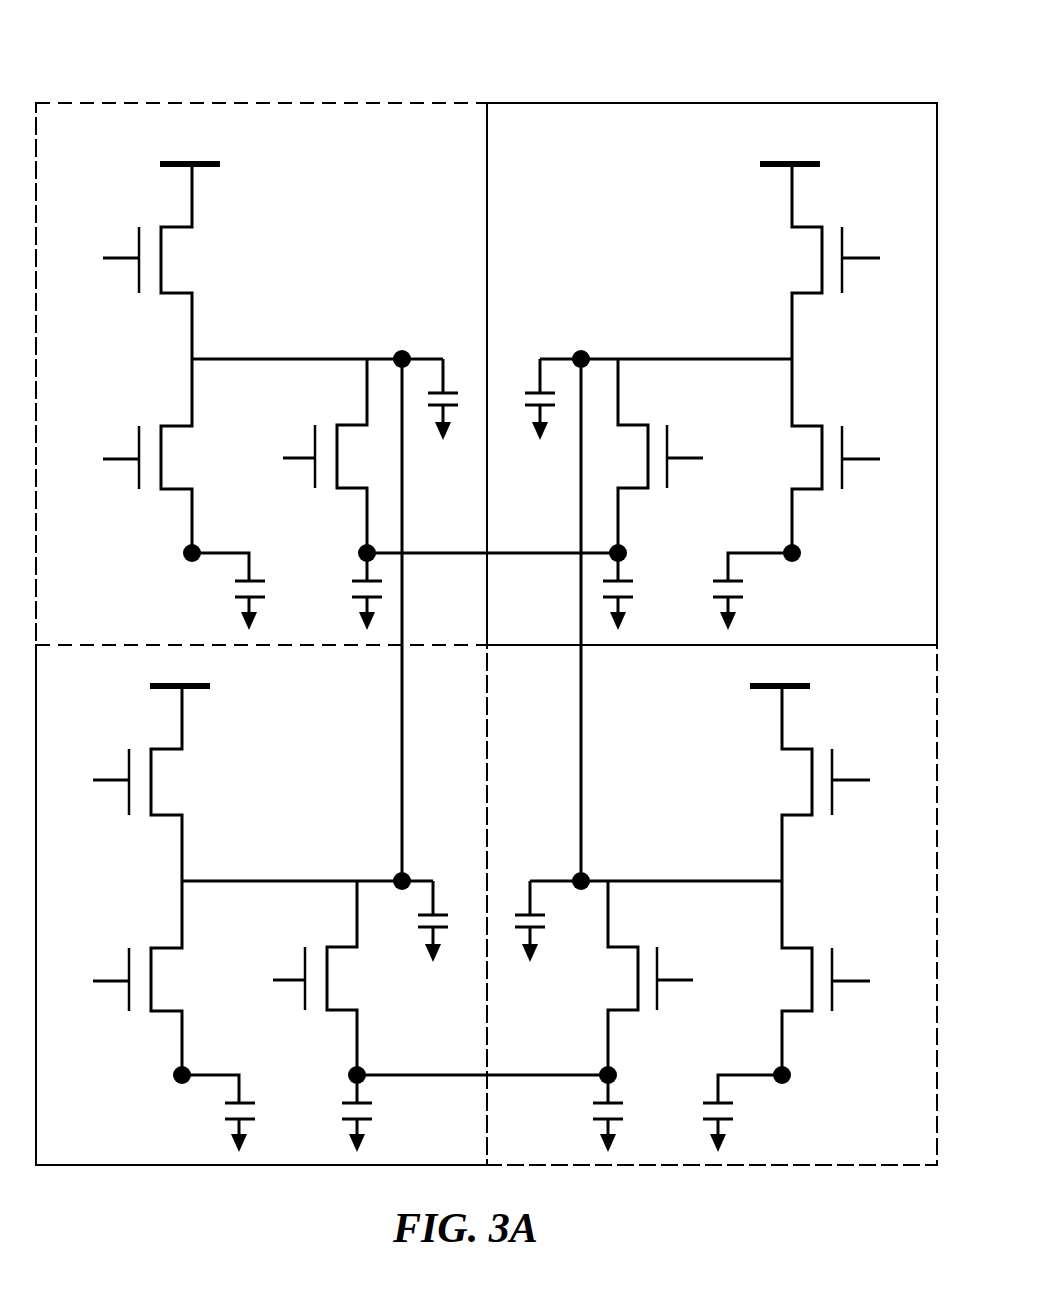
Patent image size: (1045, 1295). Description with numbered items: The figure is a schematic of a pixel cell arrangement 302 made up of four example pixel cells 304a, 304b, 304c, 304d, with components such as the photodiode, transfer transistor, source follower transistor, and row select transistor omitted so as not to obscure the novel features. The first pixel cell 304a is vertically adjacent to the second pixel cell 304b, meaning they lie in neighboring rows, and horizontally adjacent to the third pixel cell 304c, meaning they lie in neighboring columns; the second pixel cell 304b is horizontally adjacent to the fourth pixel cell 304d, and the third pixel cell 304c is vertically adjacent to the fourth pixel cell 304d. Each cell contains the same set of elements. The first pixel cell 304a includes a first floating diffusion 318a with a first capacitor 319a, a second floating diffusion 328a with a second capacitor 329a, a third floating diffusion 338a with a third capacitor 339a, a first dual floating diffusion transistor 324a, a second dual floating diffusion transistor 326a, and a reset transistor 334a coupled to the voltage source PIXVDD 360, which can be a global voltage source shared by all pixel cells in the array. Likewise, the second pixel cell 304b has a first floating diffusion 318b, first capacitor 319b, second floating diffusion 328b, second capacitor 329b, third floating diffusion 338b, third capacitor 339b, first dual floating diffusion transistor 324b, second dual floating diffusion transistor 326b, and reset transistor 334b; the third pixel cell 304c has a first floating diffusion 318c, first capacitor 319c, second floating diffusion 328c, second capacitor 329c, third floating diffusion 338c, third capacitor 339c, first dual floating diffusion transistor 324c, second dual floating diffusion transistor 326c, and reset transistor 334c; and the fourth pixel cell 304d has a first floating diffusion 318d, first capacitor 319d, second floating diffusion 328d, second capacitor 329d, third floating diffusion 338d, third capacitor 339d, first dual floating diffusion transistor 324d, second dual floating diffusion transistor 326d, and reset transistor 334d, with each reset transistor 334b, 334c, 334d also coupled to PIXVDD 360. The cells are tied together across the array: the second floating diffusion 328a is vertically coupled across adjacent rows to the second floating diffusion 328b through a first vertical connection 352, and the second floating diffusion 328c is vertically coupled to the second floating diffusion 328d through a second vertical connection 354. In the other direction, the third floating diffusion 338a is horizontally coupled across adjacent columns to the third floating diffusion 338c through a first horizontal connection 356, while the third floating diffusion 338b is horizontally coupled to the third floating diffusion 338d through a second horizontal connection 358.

The pixel cell circuit 302 is at (223, 90).
The first pixel cell 304a is at (105, 136).
The second pixel cell 304b is at (105, 680).
The third pixel cell 304c is at (560, 136).
The fourth pixel cell 304d is at (560, 680).
The first floating diffusion FD1 318a is at (138, 555).
The first floating diffusion FD1 318b is at (126, 1076).
The first floating diffusion FD1 318c is at (848, 555).
The first floating diffusion FD1 318d is at (839, 1076).
The first capacitor 319a is at (228, 592).
The first capacitor 319b is at (205, 1113).
The first capacitor 319c is at (745, 592).
The first capacitor 319d is at (753, 1113).
The first dual floating diffusion transistor DFD1 324a is at (76, 440).
The first dual floating diffusion transistor DFD1 324b is at (111, 978).
The first dual floating diffusion transistor DFD1 324c is at (903, 440).
The first dual floating diffusion transistor DFD1 324d is at (852, 978).
The second dual floating diffusion transistor DFD2 326a is at (255, 442).
The second dual floating diffusion transistor DFD2 326b is at (284, 978).
The second dual floating diffusion transistor DFD2 326c is at (733, 442).
The second dual floating diffusion transistor DFD2 326d is at (679, 978).
The second floating diffusion FD2 328a is at (362, 330).
The second floating diffusion FD2 328b is at (307, 847).
The second floating diffusion FD2 328c is at (612, 330).
The second floating diffusion FD2 328d is at (656, 847).
The second capacitor 329a is at (450, 373).
The second capacitor 329b is at (438, 901).
The second capacitor 329c is at (530, 373).
The second capacitor 329d is at (522, 901).
The reset transistor RST 334a is at (76, 272).
The reset transistor RST 334b is at (114, 785).
The reset transistor RST 334c is at (902, 272).
The reset transistor RST 334d is at (851, 785).
The third floating diffusion FD3 338a is at (316, 539).
The third floating diffusion FD3 338b is at (304, 1066).
The third floating diffusion FD3 338c is at (670, 539).
The third floating diffusion FD3 338d is at (663, 1066).
The third capacitor 339a is at (346, 592).
The third capacitor 339b is at (322, 1113).
The third capacitor 339c is at (640, 592).
The third capacitor 339d is at (645, 1113).
The first vertical connection 352 is at (398, 731).
The second vertical connection 354 is at (587, 731).
The first horizontal connection 356 is at (456, 558).
The second horizontal connection 358 is at (456, 1064).
The voltage source PIXVDD 360 is at (846, 672).